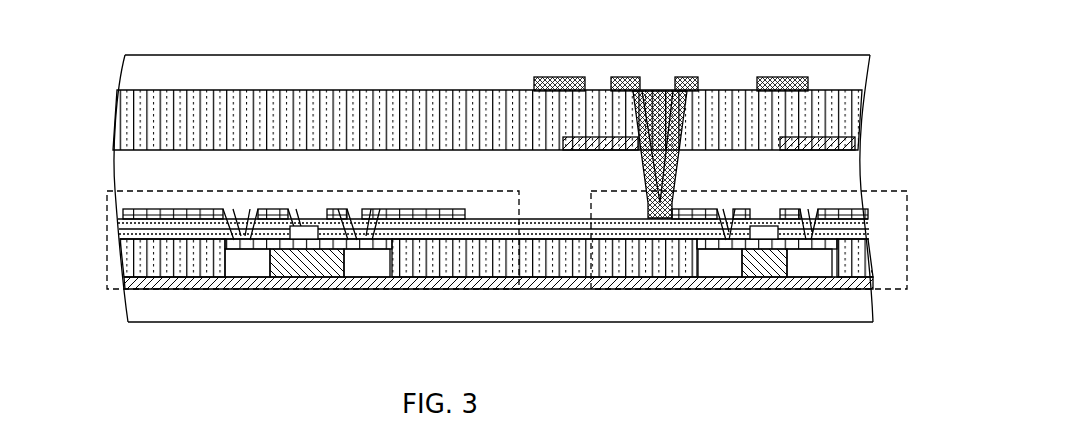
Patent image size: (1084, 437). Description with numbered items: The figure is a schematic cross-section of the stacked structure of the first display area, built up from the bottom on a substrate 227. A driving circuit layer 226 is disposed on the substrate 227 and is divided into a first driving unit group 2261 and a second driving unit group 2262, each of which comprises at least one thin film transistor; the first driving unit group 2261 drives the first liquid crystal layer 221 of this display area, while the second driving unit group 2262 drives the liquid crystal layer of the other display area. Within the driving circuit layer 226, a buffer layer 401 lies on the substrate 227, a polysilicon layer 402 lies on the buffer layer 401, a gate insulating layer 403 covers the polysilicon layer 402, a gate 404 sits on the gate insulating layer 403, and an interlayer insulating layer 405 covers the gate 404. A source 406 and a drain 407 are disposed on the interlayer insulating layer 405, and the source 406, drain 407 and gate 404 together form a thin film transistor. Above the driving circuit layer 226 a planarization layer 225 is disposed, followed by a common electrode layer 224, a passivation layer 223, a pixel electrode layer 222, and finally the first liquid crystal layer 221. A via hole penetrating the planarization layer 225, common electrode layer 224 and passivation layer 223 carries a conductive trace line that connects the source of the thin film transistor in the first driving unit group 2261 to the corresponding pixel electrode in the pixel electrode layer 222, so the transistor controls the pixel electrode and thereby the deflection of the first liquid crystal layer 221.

The first liquid crystal layer 221 is at (862, 70).
The pixel electrode layer 222 is at (790, 82).
The passivation layer 223 is at (846, 118).
The common electrode layer 224 is at (860, 146).
The planarization layer 225 is at (862, 172).
The driving circuit layer 226 is at (502, 256).
The first driving unit group 2261 is at (907, 289).
The second driving unit group 2262 is at (107, 266).
The substrate 227 is at (866, 312).
The buffer layer 401 is at (876, 279).
The polysilicon layer 402 is at (737, 258).
The gate insulating layer 403 is at (874, 256).
The gate 404 is at (775, 258).
The interlayer insulating layer 405 is at (870, 228).
The source 406 is at (691, 212).
The drain 407 is at (741, 150).